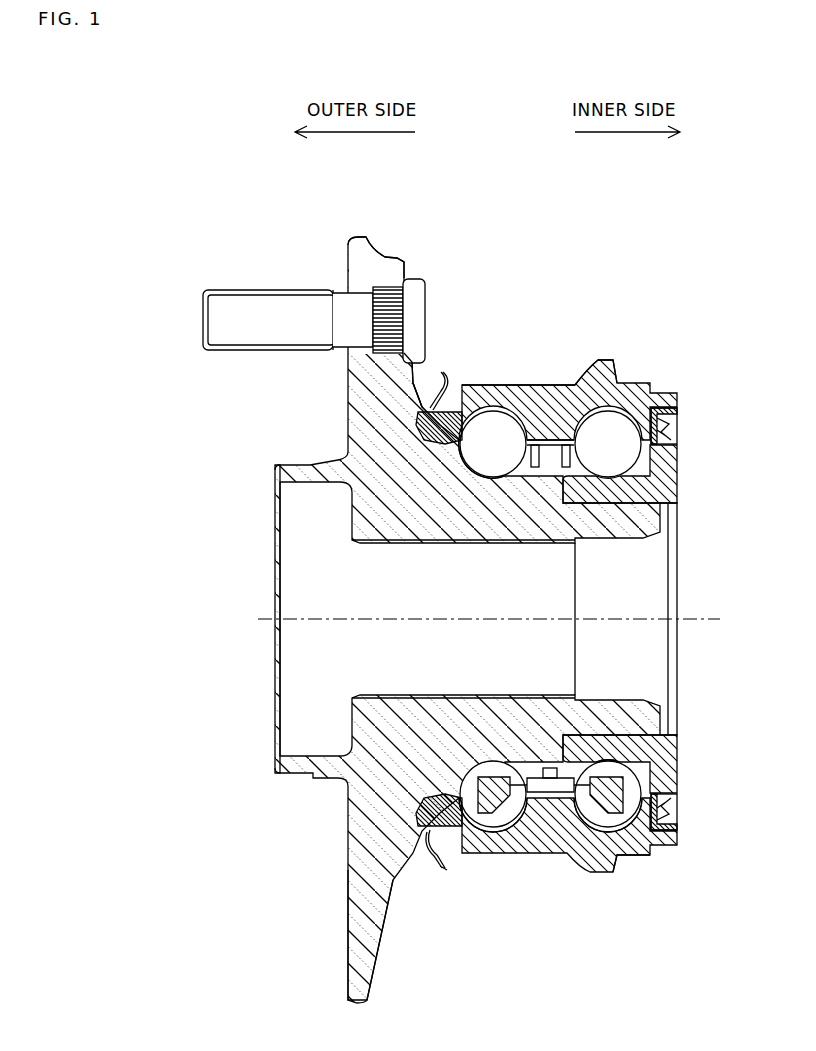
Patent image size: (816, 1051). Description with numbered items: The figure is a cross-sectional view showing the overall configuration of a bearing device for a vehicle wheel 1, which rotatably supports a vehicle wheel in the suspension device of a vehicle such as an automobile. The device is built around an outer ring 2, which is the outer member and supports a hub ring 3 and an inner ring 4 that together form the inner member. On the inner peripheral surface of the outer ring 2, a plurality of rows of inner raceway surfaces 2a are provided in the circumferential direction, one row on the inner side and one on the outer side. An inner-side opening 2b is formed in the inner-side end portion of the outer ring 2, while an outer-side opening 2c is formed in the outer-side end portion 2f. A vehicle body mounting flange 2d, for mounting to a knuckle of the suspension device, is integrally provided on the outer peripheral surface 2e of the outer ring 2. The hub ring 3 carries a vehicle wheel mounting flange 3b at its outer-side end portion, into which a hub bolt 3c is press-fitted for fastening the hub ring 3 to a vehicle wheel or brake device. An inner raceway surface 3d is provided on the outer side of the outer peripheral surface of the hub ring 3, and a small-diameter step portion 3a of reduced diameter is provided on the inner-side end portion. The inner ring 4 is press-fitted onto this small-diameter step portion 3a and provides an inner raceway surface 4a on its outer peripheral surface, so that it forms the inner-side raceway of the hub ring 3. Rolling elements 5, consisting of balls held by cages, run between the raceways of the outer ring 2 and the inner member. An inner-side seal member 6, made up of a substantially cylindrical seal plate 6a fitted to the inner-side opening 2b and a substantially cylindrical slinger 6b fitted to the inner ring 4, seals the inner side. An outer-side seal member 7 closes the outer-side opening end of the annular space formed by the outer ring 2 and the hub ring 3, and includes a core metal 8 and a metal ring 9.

The bearing device for a vehicle wheel 1 is at (129, 209).
The outer ring 2 is at (564, 372).
The inner raceway surfaces 2a is at (503, 845).
The inner-side opening 2b is at (640, 856).
The outer-side opening 2c is at (456, 852).
The vehicle body mounting flange 2d is at (603, 362).
The outer peripheral surface 2e is at (516, 383).
The outer-side end portion 2f is at (446, 365).
The hub ring 3 is at (338, 448).
The small-diameter step portion 3a is at (676, 716).
The vehicle wheel mounting flange 3b is at (360, 233).
The hub bolt 3c is at (270, 300).
The inner raceway surface 3d is at (482, 486).
The inner ring 4 is at (678, 764).
The inner raceway surface 4a is at (612, 768).
The rolling elements 5 is at (494, 430).
The inner-side seal member 6 is at (698, 417).
The seal plate 6a is at (659, 408).
The slinger 6b is at (679, 440).
The outer-side seal member 7 is at (444, 326).
The core metal 8 is at (434, 410).
The metal ring 9 is at (424, 378).